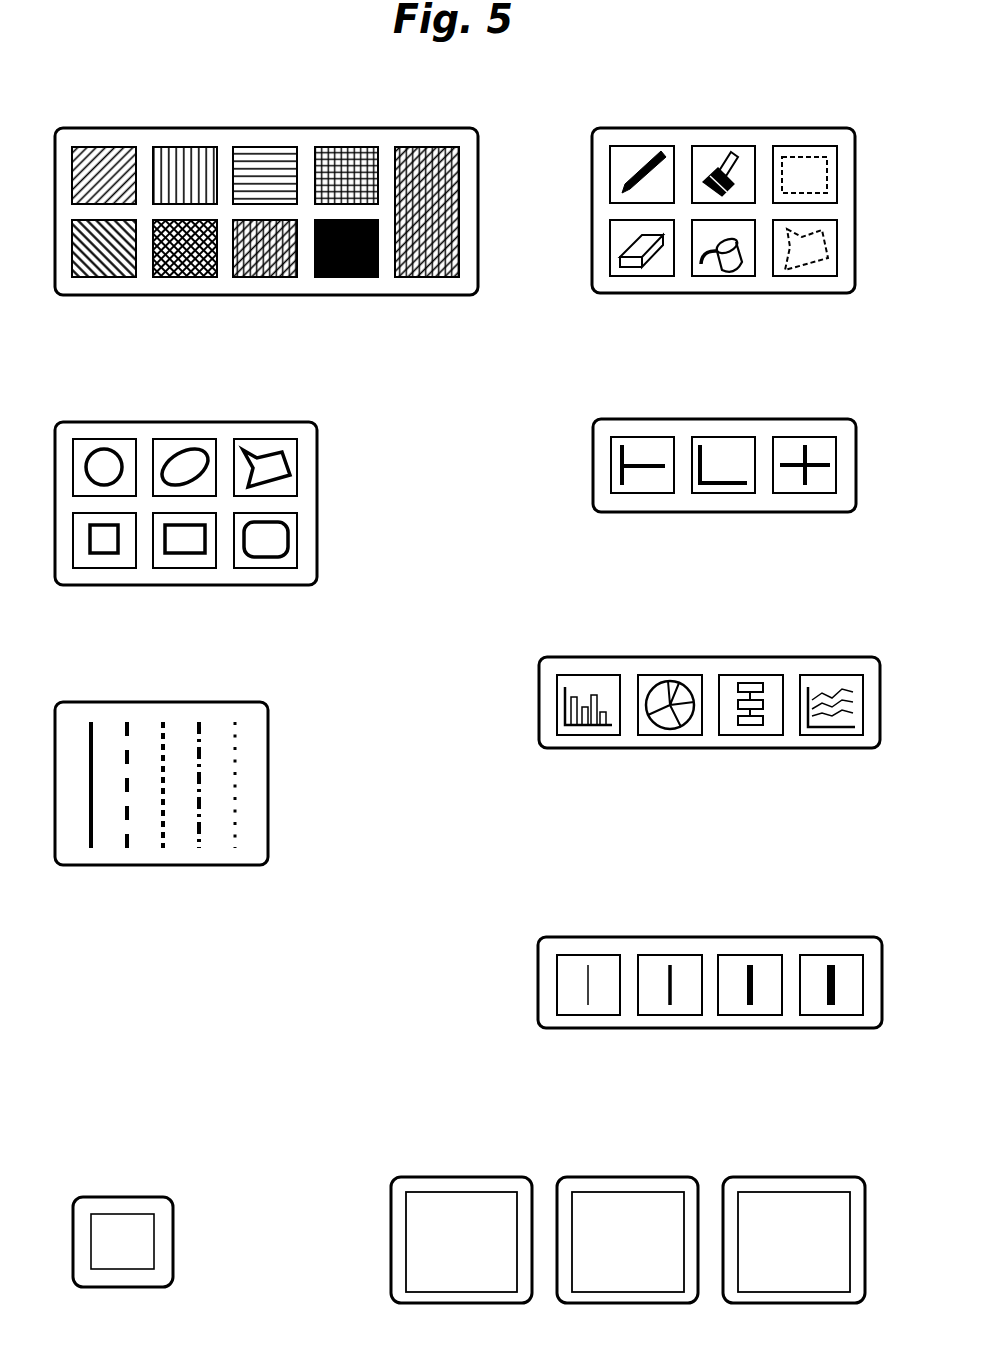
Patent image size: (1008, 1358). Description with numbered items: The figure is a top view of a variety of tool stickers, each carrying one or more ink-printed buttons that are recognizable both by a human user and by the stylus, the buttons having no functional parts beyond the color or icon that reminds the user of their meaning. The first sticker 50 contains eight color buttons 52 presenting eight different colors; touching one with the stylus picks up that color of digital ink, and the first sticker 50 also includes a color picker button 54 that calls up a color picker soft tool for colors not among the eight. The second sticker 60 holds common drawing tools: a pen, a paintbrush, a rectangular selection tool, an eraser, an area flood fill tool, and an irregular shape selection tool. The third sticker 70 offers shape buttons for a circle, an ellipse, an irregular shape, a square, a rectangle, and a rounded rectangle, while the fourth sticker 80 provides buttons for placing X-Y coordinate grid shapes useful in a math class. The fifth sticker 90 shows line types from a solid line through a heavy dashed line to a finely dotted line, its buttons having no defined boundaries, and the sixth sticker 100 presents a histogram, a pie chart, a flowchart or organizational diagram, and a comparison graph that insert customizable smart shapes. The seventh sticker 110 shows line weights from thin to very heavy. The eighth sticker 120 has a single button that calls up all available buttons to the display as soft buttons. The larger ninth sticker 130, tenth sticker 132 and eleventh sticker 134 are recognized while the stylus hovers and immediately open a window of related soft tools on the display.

The first sticker 50 is at (136, 128).
The color buttons 52 is at (250, 147).
The color picker button 54 is at (412, 278).
The second sticker 60 is at (653, 127).
The third sticker 70 is at (318, 460).
The fourth sticker 80 is at (857, 438).
The fifth sticker 90 is at (269, 747).
The sixth sticker 100 is at (685, 657).
The seventh sticker 110 is at (605, 935).
The eighth sticker 120 is at (173, 1198).
The ninth sticker 130 is at (477, 1175).
The tenth sticker 132 is at (643, 1175).
The eleventh sticker 134 is at (828, 1175).